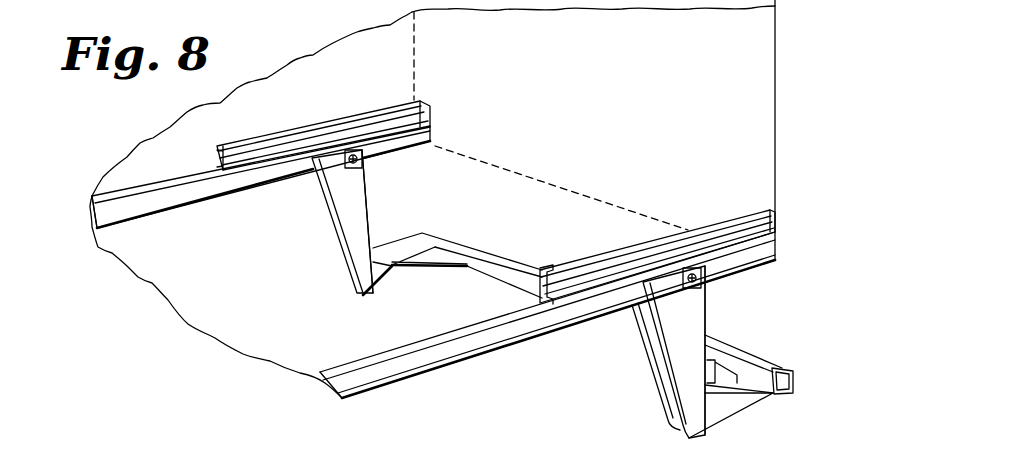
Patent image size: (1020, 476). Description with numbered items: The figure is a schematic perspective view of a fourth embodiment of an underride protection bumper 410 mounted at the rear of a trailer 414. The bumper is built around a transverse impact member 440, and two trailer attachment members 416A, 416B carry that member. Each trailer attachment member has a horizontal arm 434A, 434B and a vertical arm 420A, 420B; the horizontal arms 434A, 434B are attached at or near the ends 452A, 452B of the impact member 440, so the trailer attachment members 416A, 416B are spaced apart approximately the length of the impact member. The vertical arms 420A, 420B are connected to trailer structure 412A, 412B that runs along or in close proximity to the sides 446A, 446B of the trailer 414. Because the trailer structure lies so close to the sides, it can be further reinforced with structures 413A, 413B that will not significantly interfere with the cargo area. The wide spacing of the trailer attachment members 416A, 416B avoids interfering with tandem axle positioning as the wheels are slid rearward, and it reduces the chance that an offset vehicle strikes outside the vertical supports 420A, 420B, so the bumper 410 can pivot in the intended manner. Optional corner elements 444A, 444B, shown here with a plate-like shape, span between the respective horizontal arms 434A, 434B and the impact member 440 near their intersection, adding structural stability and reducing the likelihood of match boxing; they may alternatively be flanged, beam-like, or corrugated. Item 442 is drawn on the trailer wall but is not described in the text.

The underride protection bumper 410 is at (604, 394).
The trailer structure 412A is at (455, 346).
The trailer structure 412B is at (178, 200).
The reinforcing structure 413A is at (722, 218).
The reinforcing structure 413B is at (312, 127).
The trailer 414 is at (775, 119).
The trailer attachment member 416A is at (738, 374).
The trailer attachment member 416B is at (398, 246).
The vertical arm 420A is at (686, 323).
The vertical arm 420B is at (347, 180).
The horizontal arm 434A is at (733, 399).
The horizontal arm 434B is at (389, 270).
The impact member 440 is at (506, 262).
The ceiling 442 is at (736, 82).
The corner element 444A is at (720, 368).
The corner element 444B is at (430, 252).
The side of the trailer 446A is at (343, 355).
The side of the trailer 446B is at (128, 172).
The end of the impact member 452A is at (795, 374).
The end of the impact member 452B is at (432, 232).